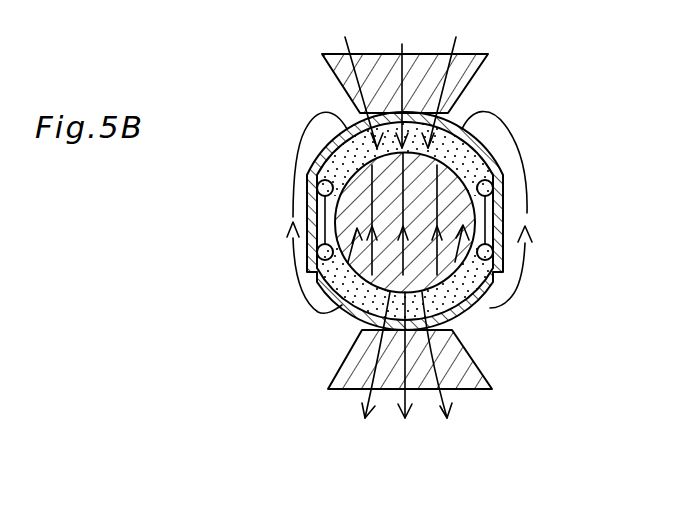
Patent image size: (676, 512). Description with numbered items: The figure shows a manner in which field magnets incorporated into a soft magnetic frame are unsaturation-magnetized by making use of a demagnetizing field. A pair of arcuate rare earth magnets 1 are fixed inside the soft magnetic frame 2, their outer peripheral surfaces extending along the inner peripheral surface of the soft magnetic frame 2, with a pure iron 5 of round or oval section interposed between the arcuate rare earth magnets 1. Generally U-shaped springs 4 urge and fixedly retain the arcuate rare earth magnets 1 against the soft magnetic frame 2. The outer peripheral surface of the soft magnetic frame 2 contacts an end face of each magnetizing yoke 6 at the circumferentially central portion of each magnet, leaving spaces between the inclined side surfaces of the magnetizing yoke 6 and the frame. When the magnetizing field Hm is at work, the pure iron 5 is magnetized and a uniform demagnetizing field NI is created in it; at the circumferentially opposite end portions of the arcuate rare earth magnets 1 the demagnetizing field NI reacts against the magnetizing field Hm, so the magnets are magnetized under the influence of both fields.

The arcuate rare earth magnets 1 is at (350, 314).
The soft magnetic frame 2 is at (335, 336).
The generally U-shaped springs 4 is at (317, 252).
The pure iron 5 is at (322, 281).
The magnetizing yokes 6 is at (358, 80).
The magnetizing field Hm is at (423, 190).
The demagnetizing field NI is at (466, 211).